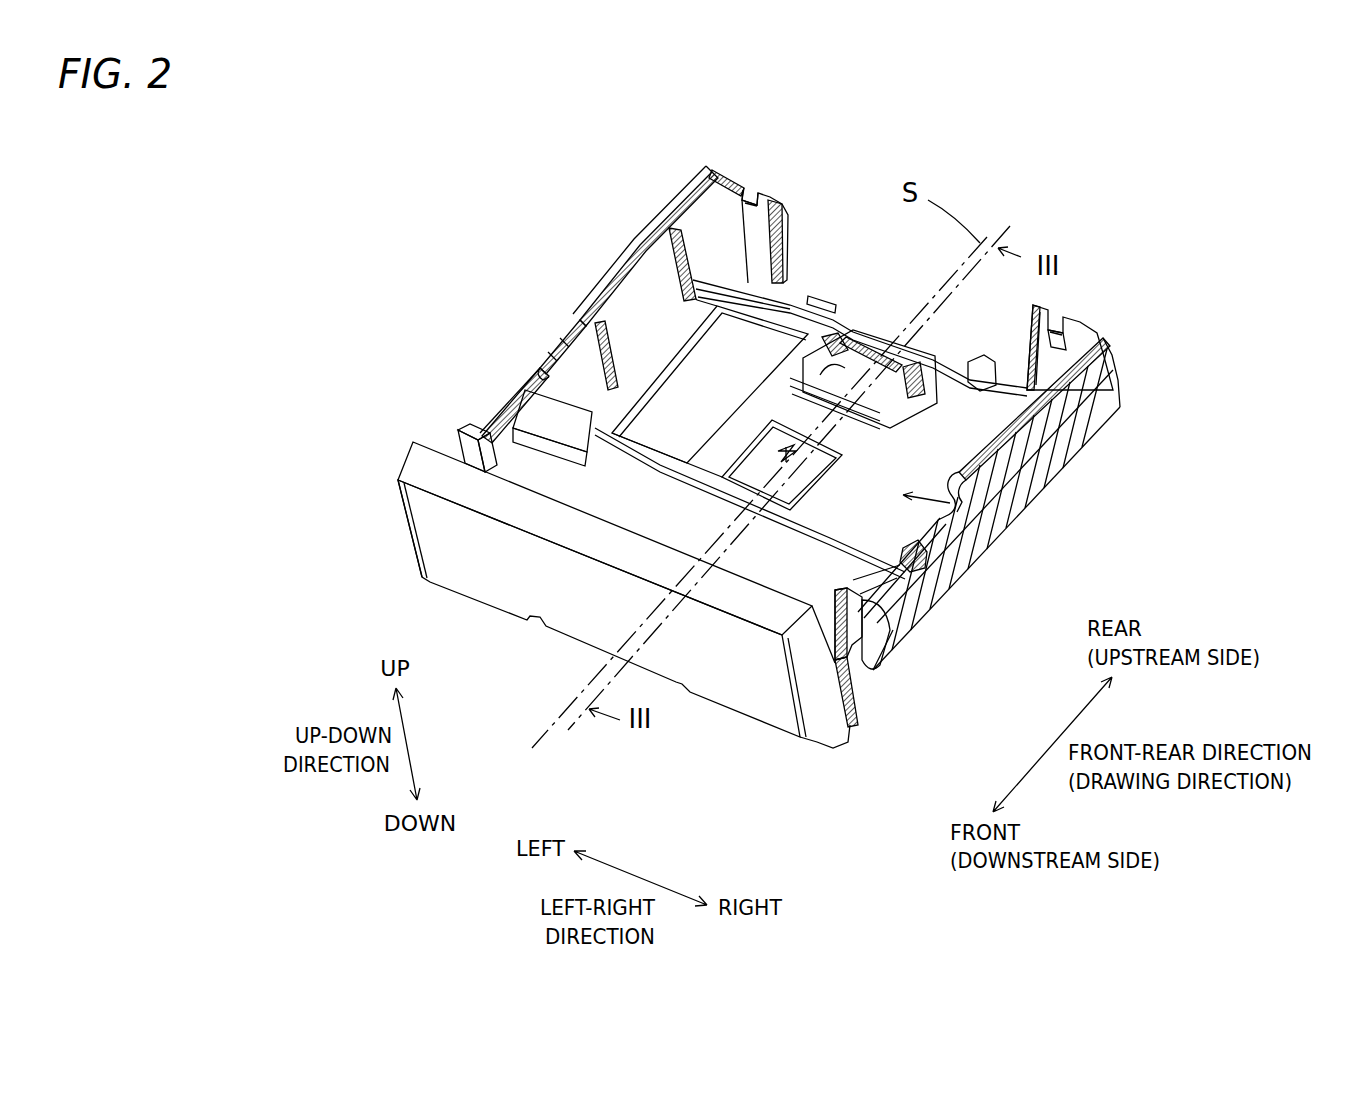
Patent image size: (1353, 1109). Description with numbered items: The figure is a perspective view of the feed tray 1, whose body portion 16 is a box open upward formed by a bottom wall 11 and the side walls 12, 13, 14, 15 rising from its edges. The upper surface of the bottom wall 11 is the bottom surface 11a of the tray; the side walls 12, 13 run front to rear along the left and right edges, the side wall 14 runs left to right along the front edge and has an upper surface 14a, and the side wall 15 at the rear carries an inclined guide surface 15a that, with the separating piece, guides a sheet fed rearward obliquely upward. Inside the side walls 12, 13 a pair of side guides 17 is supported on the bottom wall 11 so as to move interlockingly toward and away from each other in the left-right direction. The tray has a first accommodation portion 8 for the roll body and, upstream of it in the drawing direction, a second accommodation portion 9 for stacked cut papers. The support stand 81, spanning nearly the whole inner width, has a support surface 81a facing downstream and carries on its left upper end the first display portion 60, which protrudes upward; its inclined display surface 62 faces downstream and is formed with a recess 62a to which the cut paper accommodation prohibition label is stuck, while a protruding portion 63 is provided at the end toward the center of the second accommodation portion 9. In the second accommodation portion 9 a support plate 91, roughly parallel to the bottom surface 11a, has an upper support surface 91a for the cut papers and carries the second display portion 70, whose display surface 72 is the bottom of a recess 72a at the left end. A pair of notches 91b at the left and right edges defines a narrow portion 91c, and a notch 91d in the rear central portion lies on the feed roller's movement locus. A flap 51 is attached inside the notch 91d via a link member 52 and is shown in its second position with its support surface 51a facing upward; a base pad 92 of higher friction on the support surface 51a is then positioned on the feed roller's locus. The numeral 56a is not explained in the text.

The feed tray 1 is at (1103, 173).
The first accommodation portion 8 is at (525, 488).
The second accommodation portion 9 is at (878, 524).
The bottom wall 11 is at (998, 385).
The bottom surface 11a is at (784, 300).
The side wall 12 is at (1077, 460).
The side wall 13 is at (735, 298).
The side wall 14 is at (570, 612).
The upper surface 14a is at (636, 538).
The side wall 15 is at (772, 200).
The guide surface 15a is at (749, 196).
The body portion 16 is at (937, 597).
The side guide 17 is at (612, 305).
The flap 51 is at (933, 400).
The support surface 51a is at (897, 408).
The link member 52 is at (845, 425).
The sheet support plate 56a is at (805, 358).
The first display portion 60 is at (470, 391).
The display surface 62 is at (468, 420).
The recess 62a is at (522, 385).
The protruding portion 63 is at (590, 452).
The second display portion 70 is at (588, 300).
The display surface 72 is at (683, 370).
The recess 72a is at (738, 398).
The support stand 81 is at (813, 548).
The support surface 81a is at (890, 662).
The support plate 91 is at (690, 320).
The support surface 91a is at (733, 297).
The notch 91b is at (576, 334).
The narrow portion 91c is at (950, 590).
The notch 91d is at (840, 320).
The base pad 92 is at (892, 330).